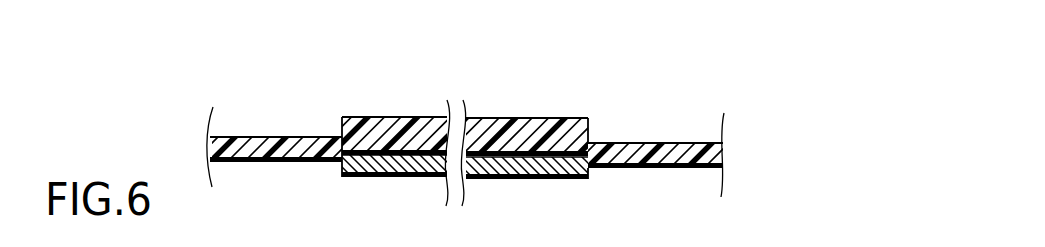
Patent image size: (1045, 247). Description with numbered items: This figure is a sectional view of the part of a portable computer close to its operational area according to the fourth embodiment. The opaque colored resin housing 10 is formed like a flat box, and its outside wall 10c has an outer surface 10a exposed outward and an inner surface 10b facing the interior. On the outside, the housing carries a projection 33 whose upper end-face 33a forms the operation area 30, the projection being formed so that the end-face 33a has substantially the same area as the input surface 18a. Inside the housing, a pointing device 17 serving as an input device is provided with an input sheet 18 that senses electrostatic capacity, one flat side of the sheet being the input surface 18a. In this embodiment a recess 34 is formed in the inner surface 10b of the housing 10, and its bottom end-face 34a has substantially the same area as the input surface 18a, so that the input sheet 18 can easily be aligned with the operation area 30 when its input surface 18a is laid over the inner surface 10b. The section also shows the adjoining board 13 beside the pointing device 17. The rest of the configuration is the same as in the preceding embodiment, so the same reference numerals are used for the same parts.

The housing 10 is at (650, 143).
The outer surface 10a is at (707, 143).
The inner surface 10b is at (666, 169).
The outside wall 10c is at (715, 152).
The wiring board 13 is at (243, 137).
The pointing device 17 is at (362, 178).
The input sheet 18 is at (420, 178).
The input surface 18a is at (483, 157).
The operation area 30 is at (386, 117).
The projection 33 is at (593, 128).
The end-face of projection 33a is at (544, 118).
The recess 34 is at (578, 180).
The end-face of recess 34a is at (490, 157).